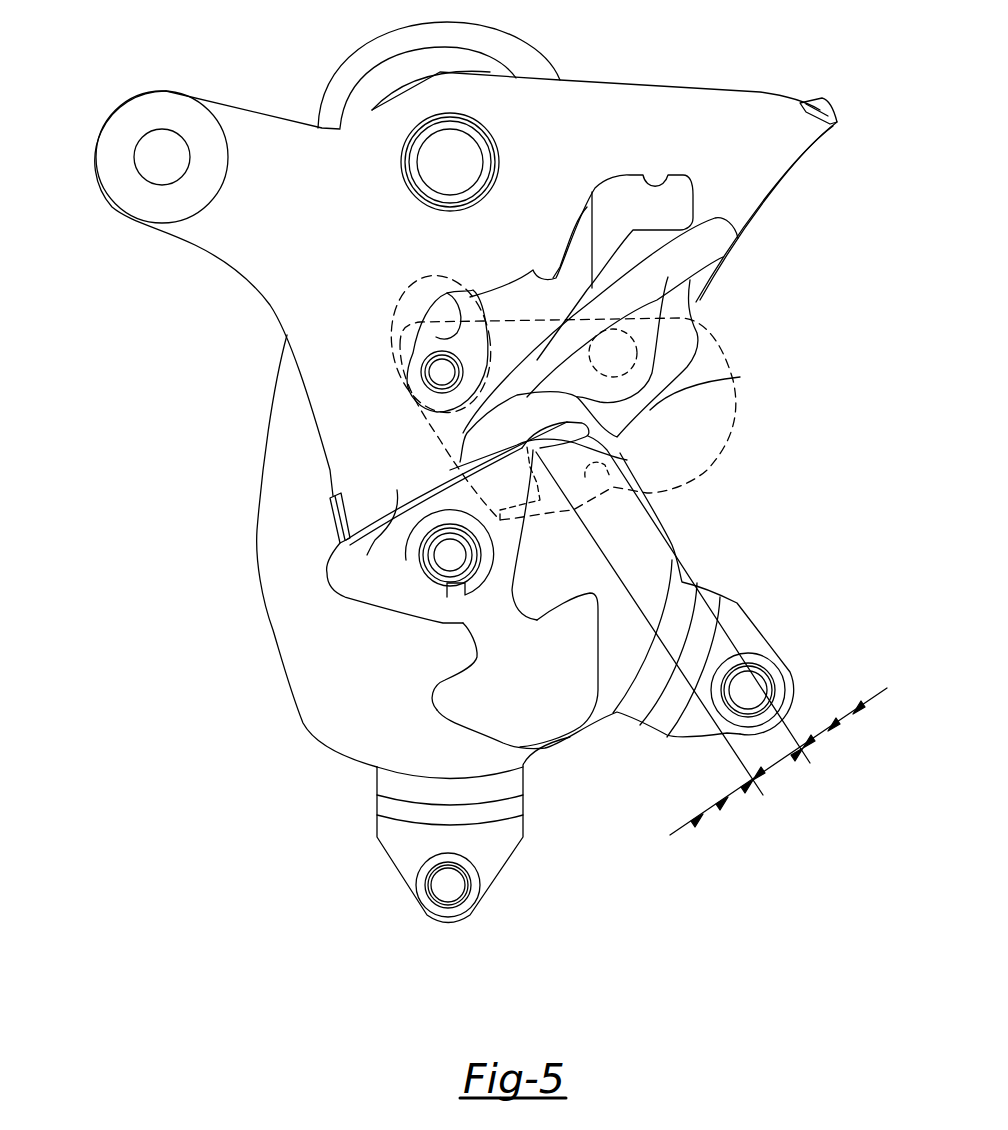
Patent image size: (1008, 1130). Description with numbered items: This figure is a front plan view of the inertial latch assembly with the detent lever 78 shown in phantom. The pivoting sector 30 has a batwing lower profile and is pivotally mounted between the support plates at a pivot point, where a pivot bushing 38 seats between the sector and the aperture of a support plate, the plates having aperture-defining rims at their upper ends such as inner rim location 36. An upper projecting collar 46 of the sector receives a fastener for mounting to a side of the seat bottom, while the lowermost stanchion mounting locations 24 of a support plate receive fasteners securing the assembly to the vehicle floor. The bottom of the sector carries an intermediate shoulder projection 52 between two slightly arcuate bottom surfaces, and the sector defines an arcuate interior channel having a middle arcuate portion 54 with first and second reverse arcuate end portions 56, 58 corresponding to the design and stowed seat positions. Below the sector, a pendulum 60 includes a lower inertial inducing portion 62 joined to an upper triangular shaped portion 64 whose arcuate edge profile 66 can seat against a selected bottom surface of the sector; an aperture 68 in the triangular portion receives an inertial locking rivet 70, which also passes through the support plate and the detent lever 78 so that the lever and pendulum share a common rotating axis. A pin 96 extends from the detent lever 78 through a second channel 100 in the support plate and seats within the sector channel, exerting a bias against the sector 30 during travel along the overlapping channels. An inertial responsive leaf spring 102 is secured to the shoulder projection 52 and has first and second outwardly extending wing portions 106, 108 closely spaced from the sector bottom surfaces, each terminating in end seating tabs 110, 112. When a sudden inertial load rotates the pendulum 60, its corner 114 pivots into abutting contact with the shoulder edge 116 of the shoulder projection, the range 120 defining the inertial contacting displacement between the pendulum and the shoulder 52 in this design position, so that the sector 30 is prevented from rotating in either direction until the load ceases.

The stanchion mounting locations 24 is at (755, 685).
The pivoting sector 30 is at (288, 152).
The inner rim location 36 is at (417, 73).
The pivot bushing 38 is at (455, 140).
The collar 46 is at (130, 118).
The intermediate shoulder projection 52 is at (700, 390).
The middle arcuate portion 54 is at (594, 207).
The first reverse arcuate end portion 56 is at (473, 290).
The second reverse arcuate end portion 58 is at (676, 178).
The pendulum 60 is at (478, 626).
The lower inertial inducing portion 62 is at (437, 705).
The upper triangular shaped portion 64 is at (337, 580).
The arcuate edge profile 66 is at (397, 492).
The aperture 68 is at (470, 573).
The inertial locking rivet 70 is at (442, 560).
The detent lever 78 is at (693, 452).
The pin 96 is at (438, 372).
The second channel 100 is at (443, 293).
The inertial responsive leaf spring 102 is at (643, 330).
The first wing portion 106 is at (395, 505).
The second wing portion 108 is at (768, 190).
The seating tab 110 is at (340, 525).
The seating tab 112 is at (828, 97).
The corner 114 is at (614, 460).
The shoulder edge 116 is at (575, 423).
The range of inertial contacting displacement 120 is at (783, 772).